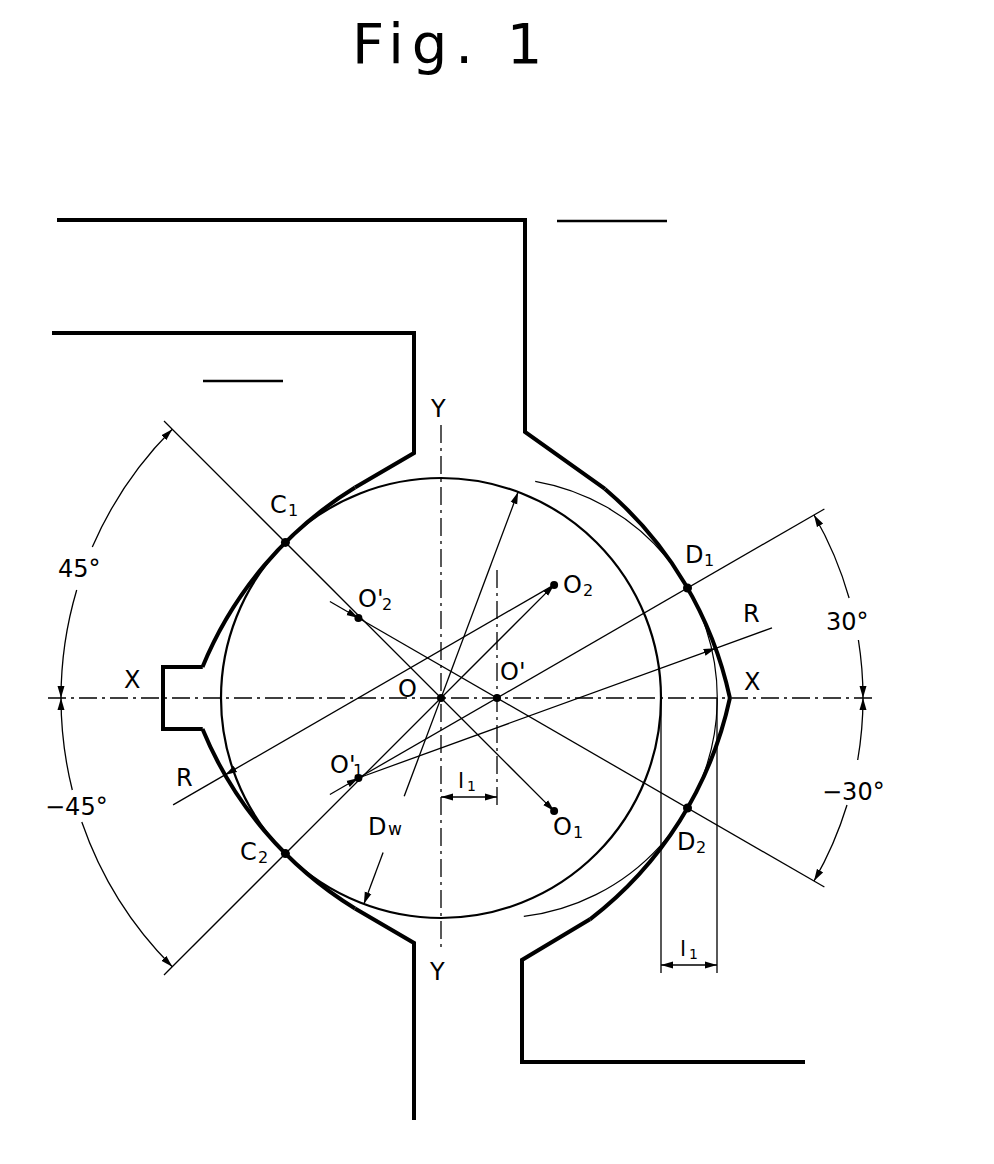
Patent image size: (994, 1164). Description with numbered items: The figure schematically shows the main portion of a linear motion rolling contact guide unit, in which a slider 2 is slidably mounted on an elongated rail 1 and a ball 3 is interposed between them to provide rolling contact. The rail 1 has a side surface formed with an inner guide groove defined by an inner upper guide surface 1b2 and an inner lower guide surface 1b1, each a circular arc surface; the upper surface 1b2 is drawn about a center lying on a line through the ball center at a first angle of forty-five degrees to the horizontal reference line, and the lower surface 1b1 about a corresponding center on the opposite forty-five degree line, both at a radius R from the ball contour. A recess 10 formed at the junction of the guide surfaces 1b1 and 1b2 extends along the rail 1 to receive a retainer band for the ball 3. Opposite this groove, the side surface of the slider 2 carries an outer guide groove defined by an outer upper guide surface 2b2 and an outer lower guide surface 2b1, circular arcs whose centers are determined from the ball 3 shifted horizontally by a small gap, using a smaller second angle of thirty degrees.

The rail 1 is at (79, 352).
The slider 2 is at (474, 220).
The ball 3 is at (490, 883).
The recess 10 is at (170, 707).
The inner lower guide surface 1b1 is at (372, 927).
The inner upper guide surface 1b2 is at (240, 586).
The outer lower guide surface 2b1 is at (587, 921).
The outer upper guide surface 2b2 is at (636, 489).